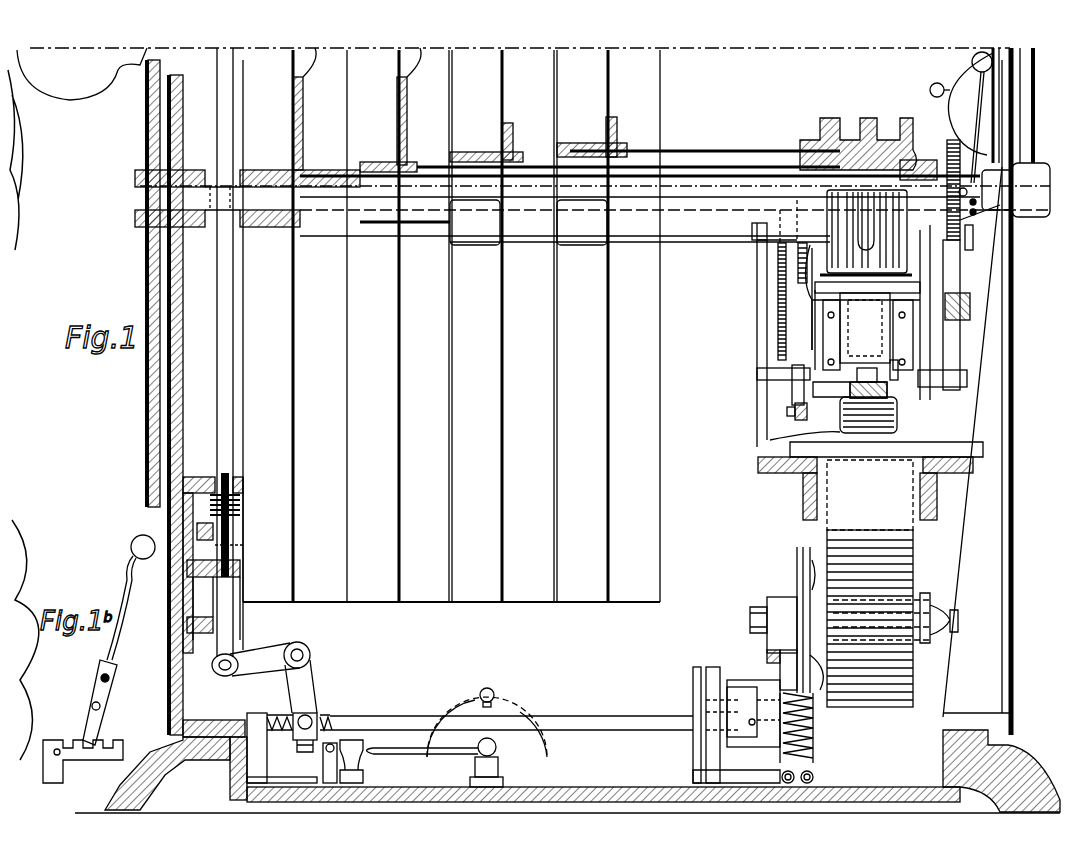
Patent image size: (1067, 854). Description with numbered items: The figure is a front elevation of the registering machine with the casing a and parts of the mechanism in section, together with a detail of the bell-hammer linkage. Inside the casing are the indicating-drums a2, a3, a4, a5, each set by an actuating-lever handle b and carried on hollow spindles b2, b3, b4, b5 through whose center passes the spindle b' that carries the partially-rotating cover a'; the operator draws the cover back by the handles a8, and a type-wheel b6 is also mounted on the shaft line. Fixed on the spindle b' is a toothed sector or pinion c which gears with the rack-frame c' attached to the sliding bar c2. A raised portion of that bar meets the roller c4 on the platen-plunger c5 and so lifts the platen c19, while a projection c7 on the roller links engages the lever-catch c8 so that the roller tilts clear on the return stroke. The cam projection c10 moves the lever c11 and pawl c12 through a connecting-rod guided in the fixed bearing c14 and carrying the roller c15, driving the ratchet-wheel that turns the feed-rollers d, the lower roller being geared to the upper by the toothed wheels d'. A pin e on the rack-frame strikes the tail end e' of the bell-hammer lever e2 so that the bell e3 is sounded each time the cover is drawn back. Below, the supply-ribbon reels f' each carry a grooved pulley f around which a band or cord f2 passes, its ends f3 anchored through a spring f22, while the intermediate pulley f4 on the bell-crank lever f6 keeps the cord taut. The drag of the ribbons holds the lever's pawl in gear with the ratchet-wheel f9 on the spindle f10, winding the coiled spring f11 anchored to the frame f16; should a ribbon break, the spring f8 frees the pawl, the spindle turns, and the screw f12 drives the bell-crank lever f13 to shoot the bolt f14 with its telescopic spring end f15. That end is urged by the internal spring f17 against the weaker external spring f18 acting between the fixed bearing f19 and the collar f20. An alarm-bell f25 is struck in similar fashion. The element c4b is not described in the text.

In FIG. 1, the handles a8 is at (82, 74).
In FIG. 1, the partially-rotating cover a' is at (152, 397).
In FIG. 1, the casing a is at (567, 430).
In FIG. 1, the toothed wheels d' is at (893, 283).
In FIG. 1, the spindle b' is at (592, 137).
In FIG. 1, the actuating-lever handles b is at (595, 352).
In FIG. 1, the hollow spindle b2 is at (690, 160).
In FIG. 1, the hollow spindle b3 is at (702, 166).
In FIG. 1, the hollow spindle b4 is at (715, 172).
In FIG. 1, the hollow spindle b5 is at (728, 177).
In FIG. 1, the type-wheel b6 is at (868, 136).
In FIG. 1, the indicating-drum a2 is at (295, 335).
In FIG. 1, the indicating-drum a3 is at (398, 335).
In FIG. 1, the indicating-drum a4 is at (502, 335).
In FIG. 1, the indicating-drum a5 is at (607, 335).
In FIG. 1, the bell e3 is at (961, 104).
In FIG. 1, the roller c4 is at (981, 117).
In FIG. 1b, the roller c4 is at (131, 597).
In FIG. 1, the toothed sector or pinion c is at (955, 182).
In FIG. 1, the pin e is at (980, 237).
In FIG. 1b, the pin e is at (76, 761).
In FIG. 1, the feed-rollers d is at (866, 233).
In FIG. 1, the lever-catch c8 is at (819, 309).
In FIG. 1, the platen c19 is at (867, 287).
In FIG. 1, the platen-plunger c5 is at (866, 328).
In FIG. 1, the lever c11 is at (826, 335).
In FIG. 1, the pawl c12 is at (906, 335).
In FIG. 1, the rack-frame c' is at (945, 312).
In FIG. 1, the fixed bearing c14 is at (862, 377).
In FIG. 1, the roller c15 is at (805, 404).
In FIG. 1, the sliding bar c2 is at (850, 390).
In FIG. 1, the cam projection c10 is at (795, 410).
In FIG. 1, the projection c7 is at (898, 382).
In FIG. 1, the roller c4b is at (868, 423).
In FIG. 1, the supply-ribbon reels f' is at (870, 574).
In FIG. 1, the grooved pulley f is at (795, 620).
In FIG. 1, the bell-crank lever f6 is at (817, 575).
In FIG. 1, the intermediate pulley f4 is at (815, 665).
In FIG. 1, the ends of the cord f3 is at (815, 708).
In FIG. 1, the spring f22 is at (813, 745).
In FIG. 1, the ratchet-wheel f9 is at (753, 719).
In FIG. 1, the band or cord f2 is at (736, 725).
In FIG. 1, the frame f16 is at (652, 788).
In FIG. 1, the spindle f10 is at (511, 721).
In FIG. 1, the alarm-bell f25 is at (457, 737).
In FIG. 1, the screw f12 is at (328, 715).
In FIG. 1, the bell-crank lever f13 is at (264, 677).
In FIG. 1, the coiled spring f11 is at (282, 748).
In FIG. 1, the spring f8 is at (323, 761).
In FIG. 1, the telescopic spring end f15 is at (232, 478).
In FIG. 1, the fixed bearing f19 is at (242, 492).
In FIG. 1, the external spring f18 is at (241, 508).
In FIG. 1, the internal spring f17 is at (214, 530).
In FIG. 1, the collar f20 is at (242, 543).
In FIG. 1, the bolt f14 is at (237, 612).
In FIG. 1b, the bell-hammer lever e2 is at (96, 690).
In FIG. 1b, the tail end e' is at (95, 718).